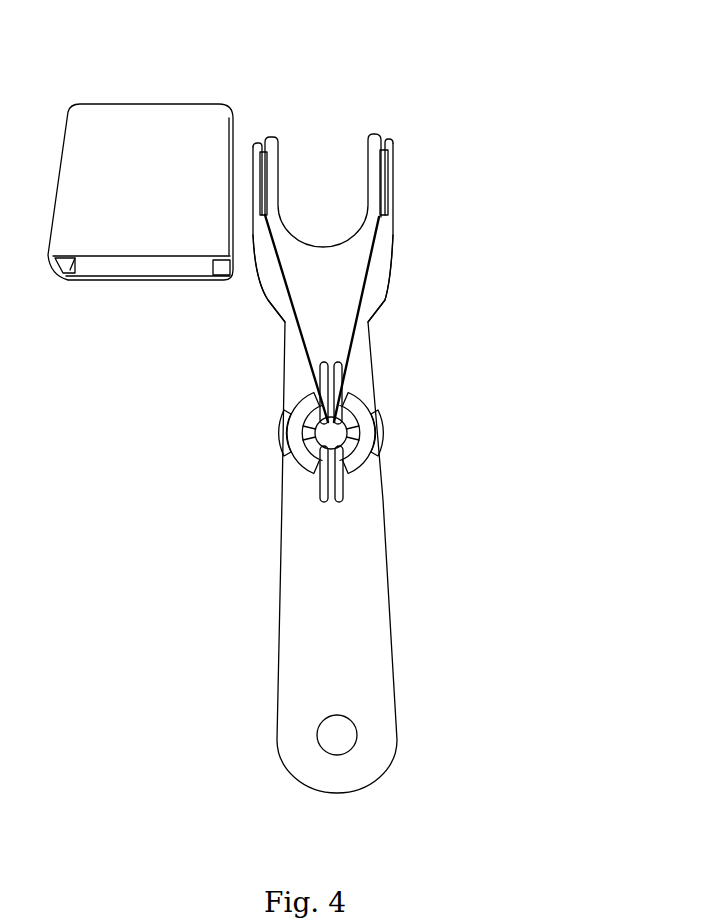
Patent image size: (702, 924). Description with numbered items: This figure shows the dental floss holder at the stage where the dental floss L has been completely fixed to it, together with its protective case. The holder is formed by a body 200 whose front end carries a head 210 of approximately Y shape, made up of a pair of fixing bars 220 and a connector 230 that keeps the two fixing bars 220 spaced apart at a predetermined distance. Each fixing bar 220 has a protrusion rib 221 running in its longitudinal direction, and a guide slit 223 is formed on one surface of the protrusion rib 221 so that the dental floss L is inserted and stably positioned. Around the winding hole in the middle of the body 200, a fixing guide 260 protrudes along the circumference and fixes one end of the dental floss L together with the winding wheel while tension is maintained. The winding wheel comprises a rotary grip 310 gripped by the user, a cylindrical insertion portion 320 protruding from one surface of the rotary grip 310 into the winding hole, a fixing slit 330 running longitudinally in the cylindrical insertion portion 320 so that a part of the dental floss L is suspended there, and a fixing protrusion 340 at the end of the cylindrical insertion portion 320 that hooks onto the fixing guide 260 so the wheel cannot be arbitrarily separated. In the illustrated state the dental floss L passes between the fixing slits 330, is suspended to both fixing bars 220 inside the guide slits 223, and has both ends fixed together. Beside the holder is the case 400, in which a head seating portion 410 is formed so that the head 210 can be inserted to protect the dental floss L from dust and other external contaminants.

The body 200 is at (359, 423).
The head 210 is at (403, 423).
The fixing bars 220 is at (388, 220).
The protrusion rib 221 is at (272, 137).
The guide slit 223 is at (393, 197).
The connector 230 is at (382, 277).
The fixing guide 260 is at (273, 440).
The rotary grip 310 is at (277, 427).
The cylindrical insertion portion 320 is at (348, 417).
The fixing slit 330 is at (318, 460).
The fixing protrusion 340 is at (293, 397).
The case 400 is at (140, 196).
The head seating portion 410 is at (140, 268).
The dental floss L is at (260, 302).